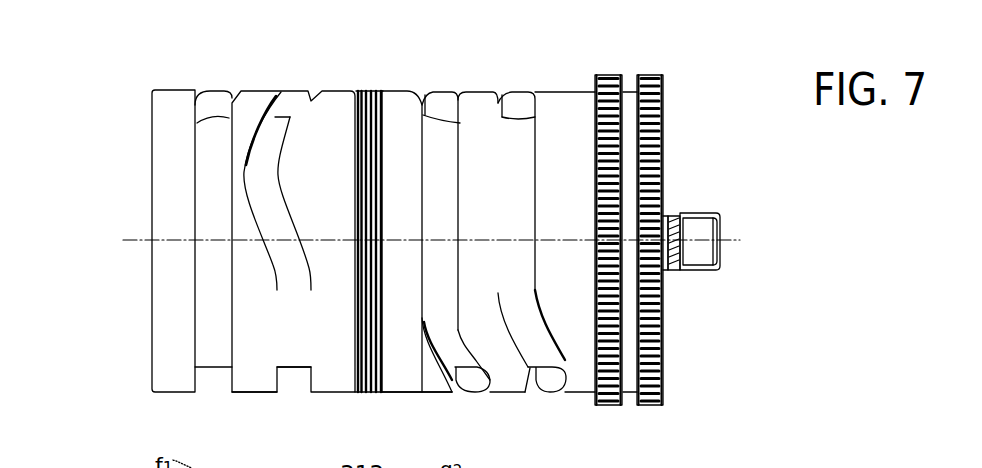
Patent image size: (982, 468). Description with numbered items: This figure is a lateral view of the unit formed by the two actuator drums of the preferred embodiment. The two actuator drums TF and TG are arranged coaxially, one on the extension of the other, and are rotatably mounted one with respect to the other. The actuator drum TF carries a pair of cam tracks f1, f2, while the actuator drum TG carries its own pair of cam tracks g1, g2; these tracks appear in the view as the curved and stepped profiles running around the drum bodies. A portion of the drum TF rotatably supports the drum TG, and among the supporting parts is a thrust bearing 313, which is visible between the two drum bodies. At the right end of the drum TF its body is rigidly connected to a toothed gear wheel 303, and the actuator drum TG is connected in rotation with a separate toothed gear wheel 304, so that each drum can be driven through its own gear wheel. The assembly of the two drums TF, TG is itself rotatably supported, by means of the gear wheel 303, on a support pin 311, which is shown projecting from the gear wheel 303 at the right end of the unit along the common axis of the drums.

The cam track f1 is at (212, 130).
The cam track f2 is at (287, 127).
The thrust bearing 313 is at (367, 92).
The cam track g2 is at (440, 143).
The cam track g1 is at (520, 143).
The support pin 311 is at (699, 268).
The toothed gear wheel 303 is at (667, 404).
The toothed gear wheel 304 is at (607, 407).
The actuator drum TF is at (243, 394).
The actuator drum TG is at (422, 394).